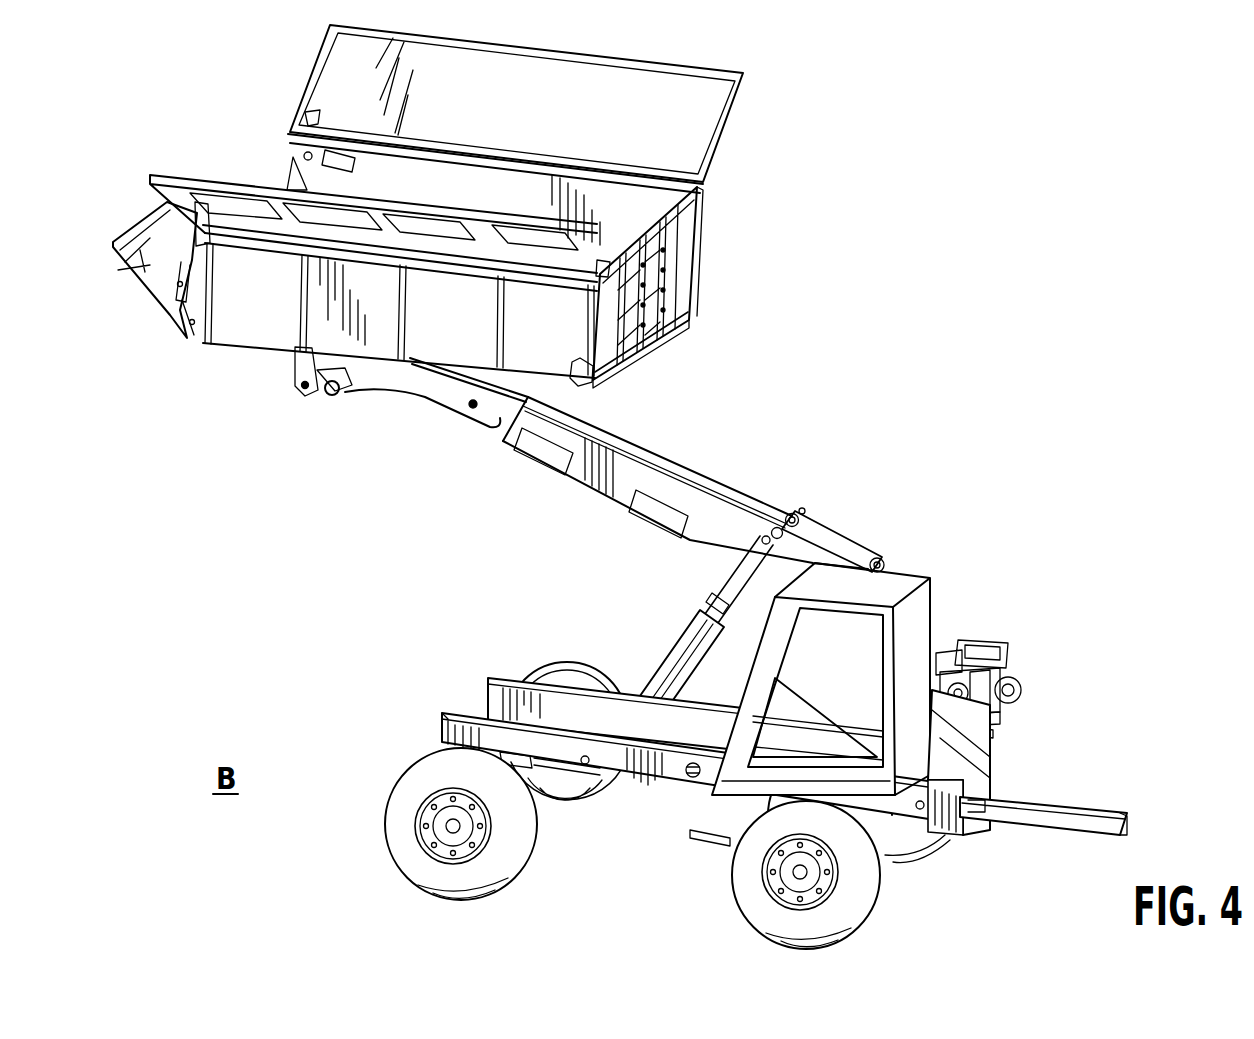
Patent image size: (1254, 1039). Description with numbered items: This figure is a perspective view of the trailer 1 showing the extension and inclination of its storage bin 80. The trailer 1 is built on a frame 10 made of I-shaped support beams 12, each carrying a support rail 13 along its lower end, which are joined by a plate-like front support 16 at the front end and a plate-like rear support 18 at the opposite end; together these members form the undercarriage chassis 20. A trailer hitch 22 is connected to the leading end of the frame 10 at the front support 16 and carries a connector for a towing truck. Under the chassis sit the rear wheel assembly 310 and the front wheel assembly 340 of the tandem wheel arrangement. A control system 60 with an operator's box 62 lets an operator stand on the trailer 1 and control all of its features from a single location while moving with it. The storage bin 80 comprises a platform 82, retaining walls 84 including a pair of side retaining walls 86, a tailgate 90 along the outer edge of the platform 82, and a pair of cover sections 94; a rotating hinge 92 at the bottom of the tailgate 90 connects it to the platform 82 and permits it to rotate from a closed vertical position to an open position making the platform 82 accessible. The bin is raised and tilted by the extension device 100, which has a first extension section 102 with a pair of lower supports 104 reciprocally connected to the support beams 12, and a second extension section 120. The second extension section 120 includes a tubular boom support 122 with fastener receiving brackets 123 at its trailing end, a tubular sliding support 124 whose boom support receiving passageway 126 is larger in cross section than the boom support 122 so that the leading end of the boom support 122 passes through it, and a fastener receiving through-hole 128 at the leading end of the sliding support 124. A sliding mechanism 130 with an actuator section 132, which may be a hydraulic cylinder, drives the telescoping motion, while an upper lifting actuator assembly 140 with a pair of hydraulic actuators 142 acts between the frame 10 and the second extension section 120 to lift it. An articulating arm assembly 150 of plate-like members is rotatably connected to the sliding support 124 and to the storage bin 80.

The trailer 1 is at (995, 522).
The frame 10 is at (590, 780).
The support beams 12 is at (640, 770).
The support rail 13 is at (593, 777).
The front support 16 is at (983, 758).
The rear support 18 is at (440, 722).
The undercarriage chassis 20 is at (710, 808).
The trailer hitch 22 is at (1083, 803).
The control system 60 is at (922, 608).
The operator's box 62 is at (922, 642).
The storage bin 80 is at (695, 255).
The platform 82 is at (560, 380).
The retaining walls 84 is at (667, 310).
The side retaining walls 86 is at (633, 193).
The tailgate 90 is at (213, 170).
The rotating hinge 92 is at (193, 343).
The cover sections 94 is at (607, 75).
The extension device 100 is at (735, 507).
The first extension section 102 is at (753, 670).
The lower supports 104 is at (885, 565).
The second extension section 120 is at (625, 446).
The boom support 122 is at (670, 477).
The fastener receiving brackets 123 is at (866, 560).
The sliding support 124 is at (435, 405).
The boom support receiving passageway 126 is at (518, 442).
The fastener receiving through-hole 128 is at (331, 395).
The sliding mechanism 130 is at (656, 517).
The actuator section 132 is at (658, 514).
The upper lifting actuator assembly 140 is at (660, 653).
The hydraulic actuators 142 is at (628, 697).
The articulating arm assembly 150 is at (307, 392).
The rear wheel assembly 310 is at (412, 860).
The front wheel assembly 340 is at (853, 908).